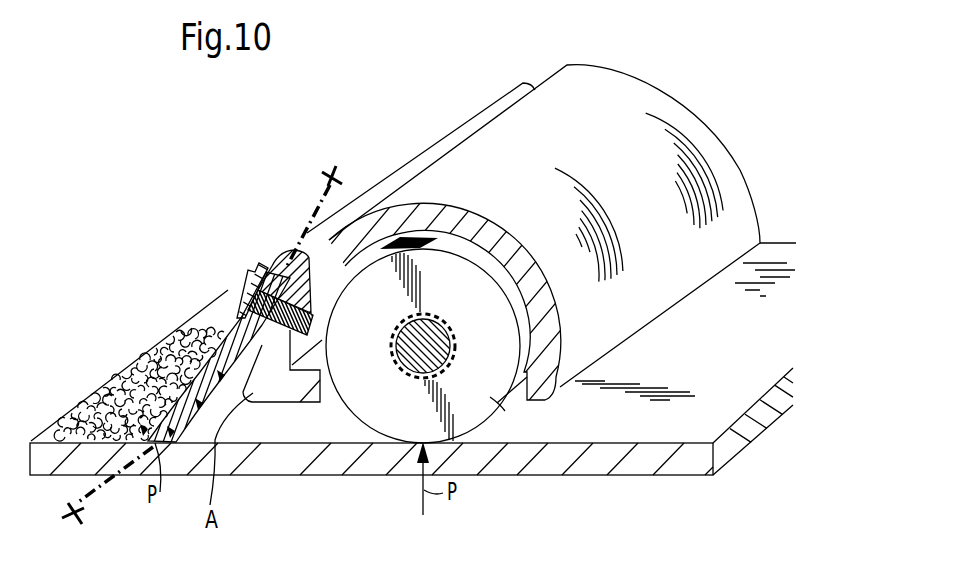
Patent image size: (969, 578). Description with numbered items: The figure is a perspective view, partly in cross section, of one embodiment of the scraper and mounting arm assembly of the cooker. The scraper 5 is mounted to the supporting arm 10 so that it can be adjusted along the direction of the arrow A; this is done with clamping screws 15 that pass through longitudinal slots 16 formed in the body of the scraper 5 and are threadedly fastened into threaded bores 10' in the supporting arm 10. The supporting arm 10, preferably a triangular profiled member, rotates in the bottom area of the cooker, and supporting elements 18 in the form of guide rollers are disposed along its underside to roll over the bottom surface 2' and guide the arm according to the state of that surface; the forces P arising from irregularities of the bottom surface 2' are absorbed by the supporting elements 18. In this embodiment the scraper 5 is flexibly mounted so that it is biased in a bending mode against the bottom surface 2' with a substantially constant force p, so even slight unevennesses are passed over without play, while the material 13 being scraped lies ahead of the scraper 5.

The bottom surface 2' is at (413, 377).
The scraper 5 is at (222, 353).
The supporting arm 10 is at (519, 235).
The threaded bores 10' is at (401, 390).
The material 13 is at (118, 395).
The clamping screws 15 is at (248, 275).
The longitudinal slots 16 is at (270, 280).
The supporting elements 18 is at (497, 398).